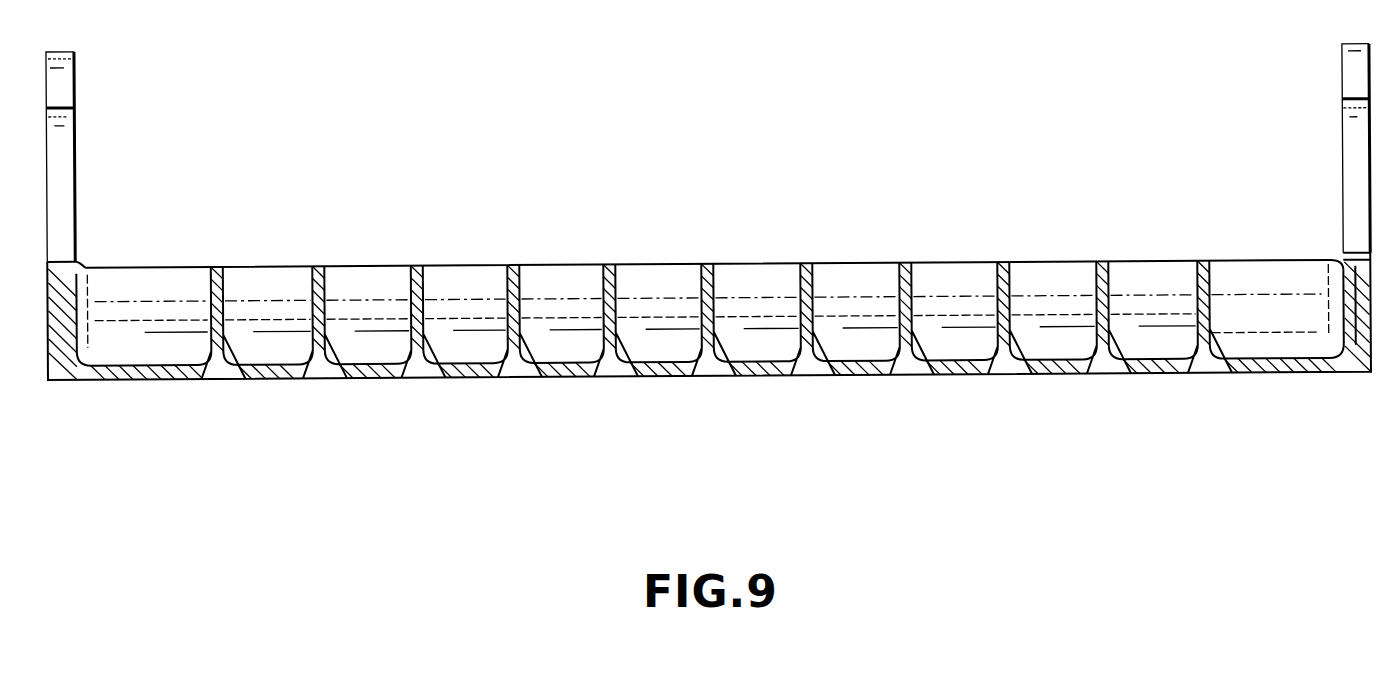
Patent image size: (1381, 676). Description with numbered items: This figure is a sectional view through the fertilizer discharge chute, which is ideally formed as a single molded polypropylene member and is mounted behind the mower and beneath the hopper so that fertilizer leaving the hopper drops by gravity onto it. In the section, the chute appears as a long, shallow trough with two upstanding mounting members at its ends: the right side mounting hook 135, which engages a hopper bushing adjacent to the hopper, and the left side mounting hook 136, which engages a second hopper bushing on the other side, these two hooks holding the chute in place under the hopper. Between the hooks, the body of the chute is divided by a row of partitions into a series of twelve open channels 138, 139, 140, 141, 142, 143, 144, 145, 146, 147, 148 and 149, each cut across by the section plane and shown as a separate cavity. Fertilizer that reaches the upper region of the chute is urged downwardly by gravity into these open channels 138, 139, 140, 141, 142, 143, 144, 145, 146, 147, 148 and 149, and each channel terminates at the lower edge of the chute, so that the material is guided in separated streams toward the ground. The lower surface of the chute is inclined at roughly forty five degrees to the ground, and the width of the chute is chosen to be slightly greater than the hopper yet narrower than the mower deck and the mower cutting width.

The right side mounting hook 135 is at (1343, 66).
The left side mounting hook 136 is at (76, 78).
The open channel 138 is at (189, 367).
The open channel 139 is at (291, 367).
The open channel 140 is at (389, 367).
The open channel 141 is at (489, 367).
The open channel 142 is at (581, 367).
The open channel 143 is at (673, 367).
The open channel 144 is at (775, 367).
The open channel 145 is at (873, 367).
The open channel 146 is at (963, 367).
The open channel 147 is at (1068, 367).
The open channel 148 is at (1165, 367).
The open channel 149 is at (1297, 367).